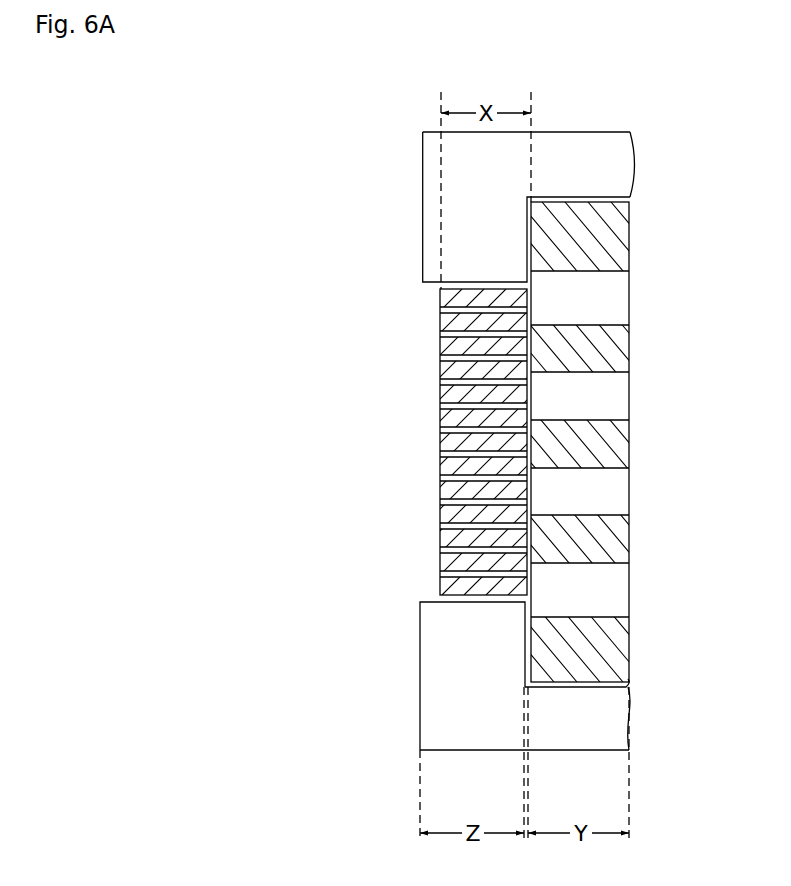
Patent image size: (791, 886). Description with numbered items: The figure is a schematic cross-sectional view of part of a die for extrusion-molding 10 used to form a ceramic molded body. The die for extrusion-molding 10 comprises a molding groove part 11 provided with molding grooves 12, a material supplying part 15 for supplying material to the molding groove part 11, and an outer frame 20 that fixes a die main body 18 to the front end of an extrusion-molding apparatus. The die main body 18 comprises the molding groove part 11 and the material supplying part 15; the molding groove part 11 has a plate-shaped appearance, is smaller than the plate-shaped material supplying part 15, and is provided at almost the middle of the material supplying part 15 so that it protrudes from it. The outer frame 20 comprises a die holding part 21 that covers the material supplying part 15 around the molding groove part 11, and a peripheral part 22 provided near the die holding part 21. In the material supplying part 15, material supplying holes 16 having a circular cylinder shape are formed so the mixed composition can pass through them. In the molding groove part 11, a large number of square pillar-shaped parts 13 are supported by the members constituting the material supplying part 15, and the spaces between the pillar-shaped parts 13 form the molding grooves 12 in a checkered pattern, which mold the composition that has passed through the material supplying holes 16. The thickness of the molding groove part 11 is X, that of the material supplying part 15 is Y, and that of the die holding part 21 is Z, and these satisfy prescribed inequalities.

The die for extrusion-molding 10 is at (620, 108).
The molding groove part 11 is at (425, 423).
The molding groove 12 is at (440, 382).
The pillar-shaped part 13 is at (440, 488).
The material supplying part 15 is at (648, 457).
The material supplying hole 16 is at (602, 383).
The die main body 18 is at (647, 288).
The outer frame 20 is at (408, 689).
The die holding part 21 is at (431, 177).
The peripheral part 22 is at (588, 721).